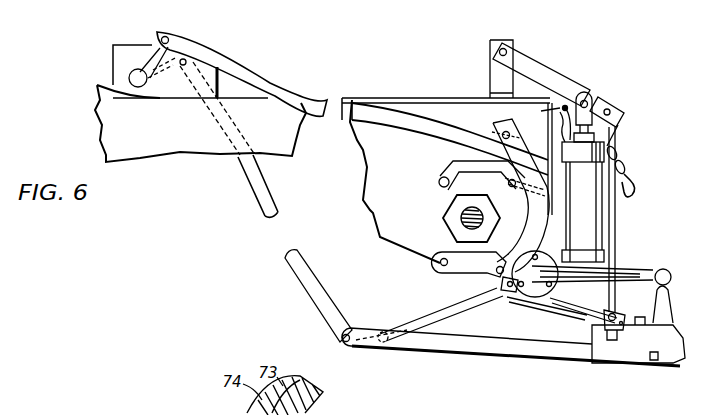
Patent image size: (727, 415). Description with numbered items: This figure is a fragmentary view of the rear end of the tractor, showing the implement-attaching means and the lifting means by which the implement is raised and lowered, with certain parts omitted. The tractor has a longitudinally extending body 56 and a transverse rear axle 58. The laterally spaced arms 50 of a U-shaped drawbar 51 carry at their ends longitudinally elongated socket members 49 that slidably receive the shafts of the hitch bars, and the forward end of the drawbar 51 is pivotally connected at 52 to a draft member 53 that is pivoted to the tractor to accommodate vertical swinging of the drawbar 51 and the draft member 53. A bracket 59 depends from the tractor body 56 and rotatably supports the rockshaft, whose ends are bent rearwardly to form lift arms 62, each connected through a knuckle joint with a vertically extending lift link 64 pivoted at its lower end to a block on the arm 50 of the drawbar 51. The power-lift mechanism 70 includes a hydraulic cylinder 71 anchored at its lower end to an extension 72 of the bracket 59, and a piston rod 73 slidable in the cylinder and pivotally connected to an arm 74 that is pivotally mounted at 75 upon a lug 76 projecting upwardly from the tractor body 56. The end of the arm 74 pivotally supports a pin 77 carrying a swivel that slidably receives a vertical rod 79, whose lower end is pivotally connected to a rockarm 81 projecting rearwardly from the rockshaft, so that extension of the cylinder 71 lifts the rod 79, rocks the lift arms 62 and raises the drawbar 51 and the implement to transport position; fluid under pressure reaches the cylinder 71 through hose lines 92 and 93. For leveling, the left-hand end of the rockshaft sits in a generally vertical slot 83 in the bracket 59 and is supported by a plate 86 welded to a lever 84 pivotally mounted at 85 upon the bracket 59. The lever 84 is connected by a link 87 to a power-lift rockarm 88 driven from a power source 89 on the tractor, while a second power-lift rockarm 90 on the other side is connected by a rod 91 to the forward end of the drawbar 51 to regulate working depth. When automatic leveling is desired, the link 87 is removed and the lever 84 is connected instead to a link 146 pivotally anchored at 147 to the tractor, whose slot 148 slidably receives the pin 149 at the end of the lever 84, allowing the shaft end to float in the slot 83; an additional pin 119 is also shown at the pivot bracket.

The socket member 49 is at (637, 343).
The arm 50 is at (567, 350).
The U-shaped drawbar 51 is at (480, 366).
The pivotal connection 52 is at (383, 348).
The draft member 53 is at (403, 323).
The tractor body 56 is at (368, 175).
The rear axle 58 is at (462, 224).
The bracket 59 is at (465, 275).
The lift arm 62 is at (645, 271).
The lift link 64 is at (673, 304).
The power-lift mechanism 70 is at (642, 141).
The hydraulic cylinder 71 is at (585, 223).
The extension 72 is at (567, 299).
The piston rod 73 is at (592, 98).
The arm 74 is at (551, 78).
The pivot 75 is at (507, 50).
The lug 76 is at (492, 70).
The pin 77 is at (612, 112).
The rod 79 is at (617, 254).
The rockarm 81 is at (583, 313).
The slot 83 is at (533, 252).
The lever 84 is at (503, 125).
The pivot 85 is at (490, 302).
The plate 86 is at (520, 292).
The link 87 is at (272, 88).
The power-lift rockarm 88 is at (149, 56).
The power source 89 is at (115, 68).
The power-lift rockarm 90 is at (170, 75).
The rod 91 is at (253, 200).
The hose line 92 is at (562, 128).
The hose line 93 is at (545, 122).
The pivot pin 119 is at (623, 110).
The link 146 is at (472, 164).
The pivotal anchor 147 is at (439, 182).
The slot 148 is at (509, 188).
The pin 149 is at (498, 128).